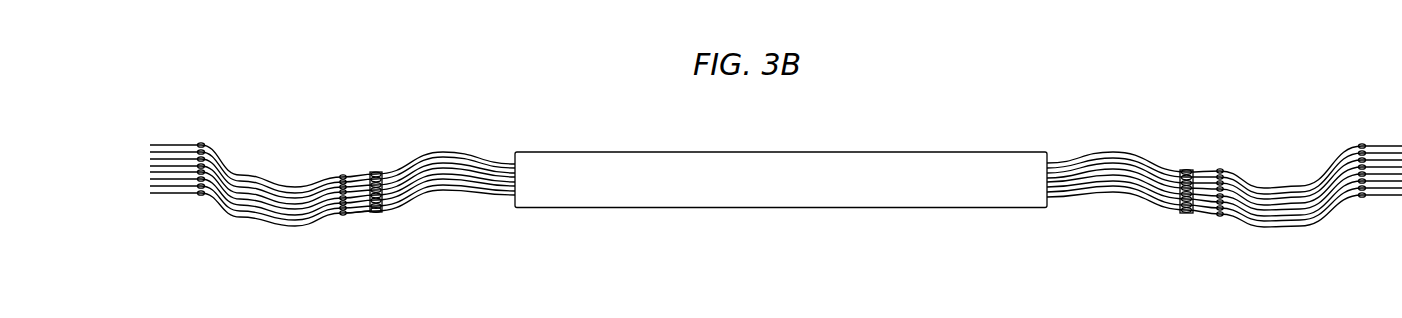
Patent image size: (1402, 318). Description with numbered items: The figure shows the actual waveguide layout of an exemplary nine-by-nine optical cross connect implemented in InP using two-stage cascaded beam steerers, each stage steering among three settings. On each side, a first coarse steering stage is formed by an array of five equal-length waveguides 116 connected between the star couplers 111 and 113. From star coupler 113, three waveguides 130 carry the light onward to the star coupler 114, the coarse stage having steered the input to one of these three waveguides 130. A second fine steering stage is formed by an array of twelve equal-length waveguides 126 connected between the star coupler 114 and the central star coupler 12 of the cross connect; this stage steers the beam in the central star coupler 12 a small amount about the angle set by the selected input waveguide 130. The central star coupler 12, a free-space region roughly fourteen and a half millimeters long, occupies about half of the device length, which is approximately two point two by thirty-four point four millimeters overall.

The central star coupler 12 is at (783, 150).
The star coupler 111 is at (200, 142).
The star coupler 113 is at (343, 174).
The star coupler 114 is at (378, 213).
The equal-length waveguides 116 is at (263, 178).
The equal-length waveguides 126 is at (447, 152).
The waveguides 130 is at (356, 215).